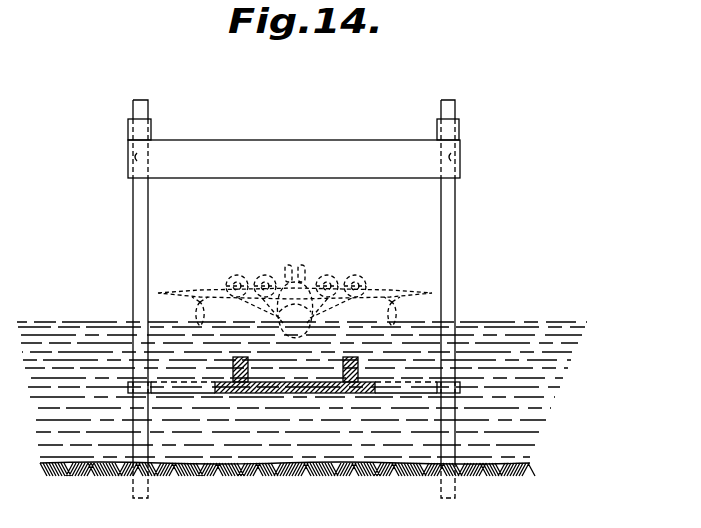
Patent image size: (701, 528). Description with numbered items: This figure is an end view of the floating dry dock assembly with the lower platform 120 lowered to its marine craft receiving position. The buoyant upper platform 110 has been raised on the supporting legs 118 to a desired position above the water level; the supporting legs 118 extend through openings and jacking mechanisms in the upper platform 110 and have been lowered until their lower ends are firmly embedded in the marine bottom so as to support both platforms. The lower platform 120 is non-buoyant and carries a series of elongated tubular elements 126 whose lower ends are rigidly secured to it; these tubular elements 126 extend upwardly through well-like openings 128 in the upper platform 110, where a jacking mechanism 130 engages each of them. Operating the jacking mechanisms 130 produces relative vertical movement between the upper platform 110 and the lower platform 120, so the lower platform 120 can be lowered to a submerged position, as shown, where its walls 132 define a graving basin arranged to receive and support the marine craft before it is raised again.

The upper platform 110 is at (302, 140).
The supporting legs 118 is at (140, 430).
The lower platform 120 is at (277, 393).
The tubular elements 126 is at (140, 222).
The well-like openings 128 is at (137, 157).
The jacking mechanism 130 is at (151, 126).
The walls 132 is at (358, 362).